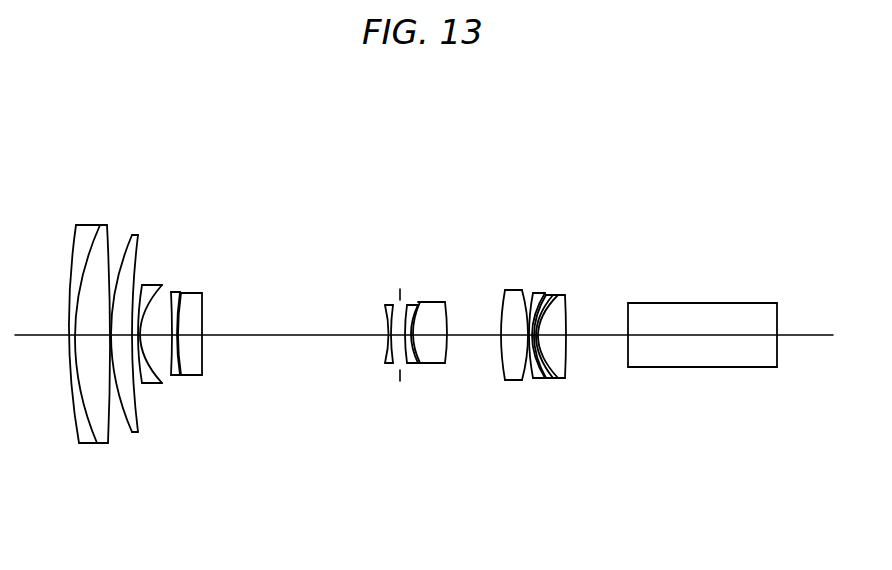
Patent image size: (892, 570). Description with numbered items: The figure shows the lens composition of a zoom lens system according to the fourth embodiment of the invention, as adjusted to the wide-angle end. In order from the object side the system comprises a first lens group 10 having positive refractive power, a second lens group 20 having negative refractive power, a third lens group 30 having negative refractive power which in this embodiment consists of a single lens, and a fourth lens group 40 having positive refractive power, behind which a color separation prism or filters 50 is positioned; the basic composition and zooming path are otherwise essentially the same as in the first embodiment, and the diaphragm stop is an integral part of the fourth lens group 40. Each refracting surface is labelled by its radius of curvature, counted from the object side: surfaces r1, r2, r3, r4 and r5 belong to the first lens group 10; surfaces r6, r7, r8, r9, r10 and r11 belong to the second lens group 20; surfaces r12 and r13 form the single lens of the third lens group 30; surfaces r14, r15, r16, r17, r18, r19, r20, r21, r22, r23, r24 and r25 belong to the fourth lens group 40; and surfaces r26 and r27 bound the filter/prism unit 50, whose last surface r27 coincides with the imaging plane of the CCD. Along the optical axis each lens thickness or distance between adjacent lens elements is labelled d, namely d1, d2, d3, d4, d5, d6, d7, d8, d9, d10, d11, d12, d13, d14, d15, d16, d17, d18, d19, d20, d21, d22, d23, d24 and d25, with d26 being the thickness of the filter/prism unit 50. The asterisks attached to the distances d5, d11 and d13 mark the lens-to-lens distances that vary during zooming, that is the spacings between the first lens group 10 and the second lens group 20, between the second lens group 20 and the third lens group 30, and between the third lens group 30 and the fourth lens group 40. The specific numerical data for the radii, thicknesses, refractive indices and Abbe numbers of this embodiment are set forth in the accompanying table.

The first lens group 10 is at (180, 135).
The second lens group 20 is at (327, 135).
The third lens group 30 is at (440, 135).
The fourth lens group 40 is at (725, 135).
The color separation prism or filters 50 is at (802, 135).
The radius of curvature r1 is at (76, 225).
The radius of curvature r2 is at (100, 225).
The radius of curvature r3 is at (107, 225).
The radius of curvature r4 is at (132, 235).
The radius of curvature r5 is at (138, 235).
The radius of curvature r6 is at (142, 285).
The radius of curvature r7 is at (162, 285).
The radius of curvature r8 is at (171, 292).
The radius of curvature r9 is at (180, 292).
The radius of curvature r10 is at (181, 293).
The radius of curvature r11 is at (202, 293).
The radius of curvature r12 is at (385, 305).
The radius of curvature r13 is at (393, 305).
The radius of curvature r14 is at (407, 305).
The radius of curvature r15 is at (418, 305).
The radius of curvature r16 is at (420, 302).
The radius of curvature r17 is at (445, 302).
The radius of curvature r18 is at (505, 290).
The radius of curvature r19 is at (522, 290).
The radius of curvature r20 is at (533, 293).
The radius of curvature r21 is at (545, 293).
The radius of curvature r22 is at (546, 295).
The radius of curvature r23 is at (553, 295).
The radius of curvature r24 is at (558, 295).
The radius of curvature r25 is at (565, 295).
The radius of curvature r26 is at (628, 303).
The last surface r27 is at (777, 303).
The lens thickness d1 is at (68, 443).
The lens thickness or distance d2 is at (92, 335).
The lens thickness or distance d3 is at (110, 443).
The lens thickness or distance d4 is at (121, 335).
The variable lens-to-lens distance d5 is at (135, 335).
The lens thickness or distance d6 is at (140, 335).
The lens thickness or distance d7 is at (156, 335).
The lens thickness or distance d8 is at (174, 335).
The lens thickness or distance d9 is at (178, 335).
The lens thickness or distance d10 is at (190, 335).
The variable lens-to-lens distance d11 is at (313, 335).
The lens thickness or distance d12 is at (390, 335).
The variable lens-to-lens distance d13 is at (397, 335).
The lens thickness or distance d14 is at (410, 335).
The lens thickness or distance d15 is at (424, 335).
The lens thickness or distance d16 is at (440, 335).
The lens thickness or distance d17 is at (466, 335).
The lens thickness or distance d18 is at (510, 335).
The lens thickness or distance d19 is at (529, 335).
The lens thickness or distance d20 is at (531, 335).
The lens thickness or distance d21 is at (533, 335).
The lens thickness or distance d22 is at (535, 335).
The lens thickness or distance d23 is at (537, 335).
The lens thickness or distance d24 is at (540, 335).
The lens thickness or distance d25 is at (565, 335).
The thickness d26 is at (700, 335).